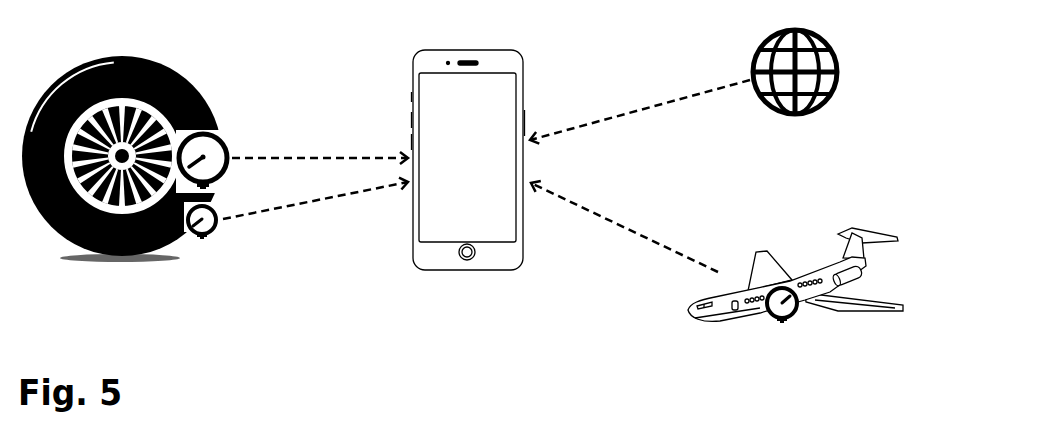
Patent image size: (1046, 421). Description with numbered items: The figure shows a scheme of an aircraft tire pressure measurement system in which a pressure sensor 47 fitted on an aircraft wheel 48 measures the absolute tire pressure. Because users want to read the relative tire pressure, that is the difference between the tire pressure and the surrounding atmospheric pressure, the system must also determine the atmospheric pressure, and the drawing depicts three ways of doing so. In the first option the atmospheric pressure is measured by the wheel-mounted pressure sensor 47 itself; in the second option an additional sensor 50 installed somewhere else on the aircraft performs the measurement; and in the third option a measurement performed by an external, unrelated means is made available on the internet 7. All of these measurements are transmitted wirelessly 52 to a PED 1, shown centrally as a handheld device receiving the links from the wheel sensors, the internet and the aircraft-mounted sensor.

The PED 1 is at (455, 268).
The internet 7 is at (835, 88).
The pressure sensor 47 is at (226, 140).
The wheel 48 is at (183, 70).
The additional sensor 50 is at (775, 320).
The wireless transmission 52 is at (348, 193).